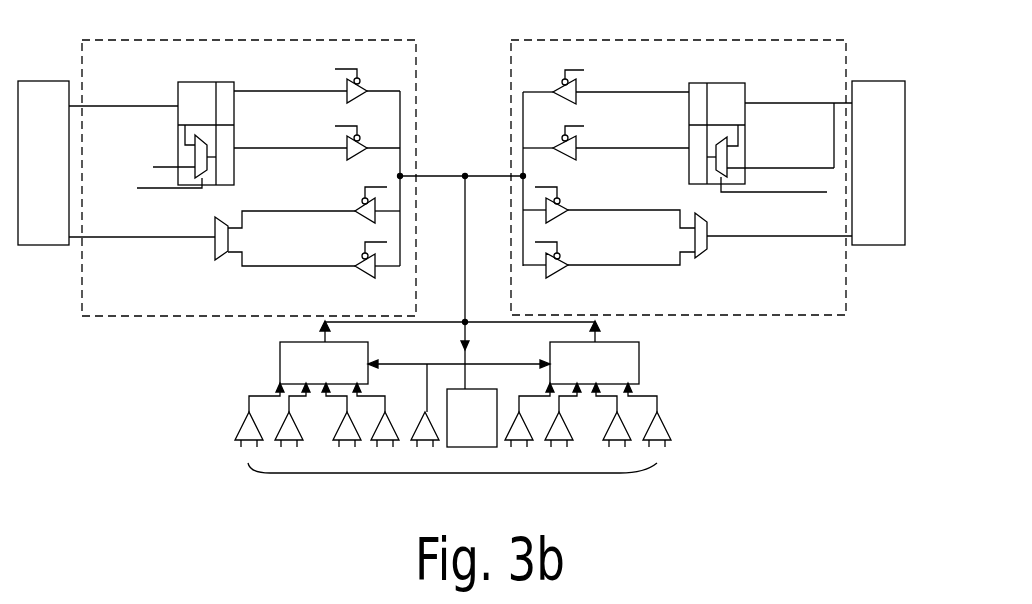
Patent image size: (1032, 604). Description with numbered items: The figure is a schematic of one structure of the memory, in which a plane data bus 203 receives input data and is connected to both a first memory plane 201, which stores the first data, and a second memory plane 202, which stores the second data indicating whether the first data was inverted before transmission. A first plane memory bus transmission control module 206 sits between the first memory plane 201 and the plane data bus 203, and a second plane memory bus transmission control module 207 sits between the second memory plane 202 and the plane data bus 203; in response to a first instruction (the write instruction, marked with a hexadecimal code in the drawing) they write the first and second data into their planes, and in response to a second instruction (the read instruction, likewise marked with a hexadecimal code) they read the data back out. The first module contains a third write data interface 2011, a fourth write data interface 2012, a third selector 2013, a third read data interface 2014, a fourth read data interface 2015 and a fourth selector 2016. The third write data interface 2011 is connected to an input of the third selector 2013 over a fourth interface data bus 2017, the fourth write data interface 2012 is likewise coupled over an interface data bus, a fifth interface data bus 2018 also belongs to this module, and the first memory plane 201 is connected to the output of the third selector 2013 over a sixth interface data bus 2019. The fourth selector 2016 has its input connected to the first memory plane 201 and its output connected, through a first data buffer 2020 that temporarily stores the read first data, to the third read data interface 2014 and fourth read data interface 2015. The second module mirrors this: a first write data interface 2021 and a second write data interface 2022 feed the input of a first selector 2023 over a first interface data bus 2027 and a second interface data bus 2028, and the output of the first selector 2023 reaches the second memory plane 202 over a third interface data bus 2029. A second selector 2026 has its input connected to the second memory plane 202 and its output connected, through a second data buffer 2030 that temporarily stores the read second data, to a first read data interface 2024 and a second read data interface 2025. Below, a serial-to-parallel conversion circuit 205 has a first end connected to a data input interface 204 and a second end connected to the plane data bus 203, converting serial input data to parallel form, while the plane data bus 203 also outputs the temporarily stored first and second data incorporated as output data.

The first memory plane 201 is at (43, 163).
The second memory plane 202 is at (878, 163).
The plane data bus 203 is at (465, 222).
The data input interface 204 is at (457, 473).
The serial-to-parallel conversion circuit 205 is at (459, 366).
The first plane memory bus transmission control module 206 is at (416, 40).
The second plane memory bus transmission control module 207 is at (846, 40).
The third write data interface 2011 is at (355, 200).
The fourth write data interface 2012 is at (355, 256).
The third selector 2013 is at (217, 220).
The third read data interface 2014 is at (366, 85).
The fourth read data interface 2015 is at (366, 142).
The fourth selector 2016 is at (207, 170).
The fourth interface data bus 2017 is at (252, 213).
The fifth interface data bus 2018 is at (252, 268).
The sixth interface data bus 2019 is at (147, 240).
The first data buffer 2020 is at (222, 82).
The first write data interface 2021 is at (568, 200).
The second write data interface 2022 is at (568, 256).
The first selector 2023 is at (703, 217).
The first read data interface 2024 is at (553, 89).
The second read data interface 2025 is at (553, 146).
The second selector 2026 is at (716, 170).
The first interface data bus 2027 is at (680, 215).
The second interface data bus 2028 is at (680, 270).
The third interface data bus 2029 is at (775, 238).
The second data buffer 2030 is at (702, 83).